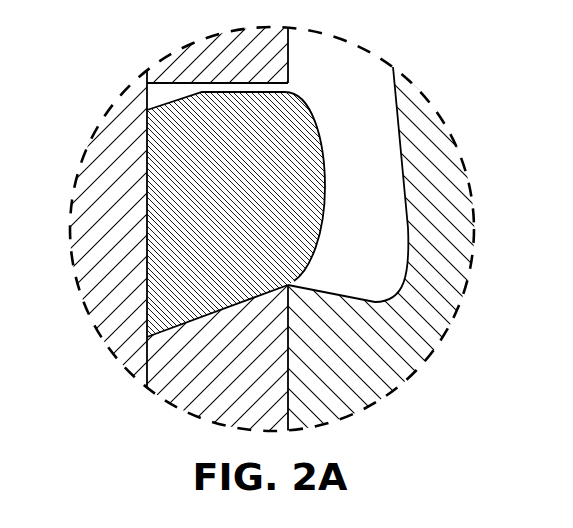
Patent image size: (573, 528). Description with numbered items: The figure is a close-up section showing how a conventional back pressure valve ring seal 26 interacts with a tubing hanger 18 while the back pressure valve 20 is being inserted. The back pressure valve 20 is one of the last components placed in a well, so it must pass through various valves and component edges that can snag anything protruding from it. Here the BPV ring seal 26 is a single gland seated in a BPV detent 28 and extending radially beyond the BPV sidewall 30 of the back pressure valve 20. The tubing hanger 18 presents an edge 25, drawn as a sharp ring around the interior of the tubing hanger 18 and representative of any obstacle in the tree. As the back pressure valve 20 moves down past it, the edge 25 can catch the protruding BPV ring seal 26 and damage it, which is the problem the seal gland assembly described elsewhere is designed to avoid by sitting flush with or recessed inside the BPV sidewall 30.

The tubing hanger 18 is at (440, 157).
The back pressure valve 20 is at (88, 171).
The edge 25 is at (302, 281).
The BPV ring seal 26 is at (203, 117).
The BPV detent 28 is at (158, 92).
The BPV sidewall 30 is at (288, 57).